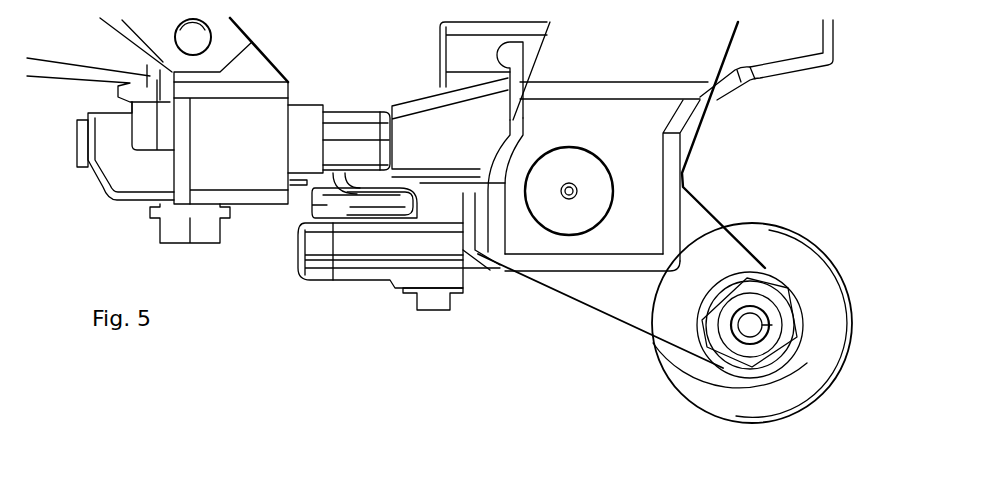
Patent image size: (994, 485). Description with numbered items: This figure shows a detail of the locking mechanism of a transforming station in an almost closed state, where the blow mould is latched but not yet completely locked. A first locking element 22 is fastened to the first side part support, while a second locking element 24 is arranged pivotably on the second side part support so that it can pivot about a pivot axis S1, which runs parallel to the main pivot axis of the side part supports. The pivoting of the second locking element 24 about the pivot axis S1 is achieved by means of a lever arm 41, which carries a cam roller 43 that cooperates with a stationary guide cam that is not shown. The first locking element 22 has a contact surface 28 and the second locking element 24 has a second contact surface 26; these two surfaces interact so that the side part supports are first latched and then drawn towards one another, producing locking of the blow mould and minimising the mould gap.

The first locking element 22 is at (338, 128).
The second locking element 24 is at (355, 248).
The second contact surface 26 is at (350, 193).
The contact surface 28 is at (345, 188).
The pivot axis S1 is at (570, 212).
The lever arm 41 is at (690, 278).
The cam roller 43 is at (807, 363).